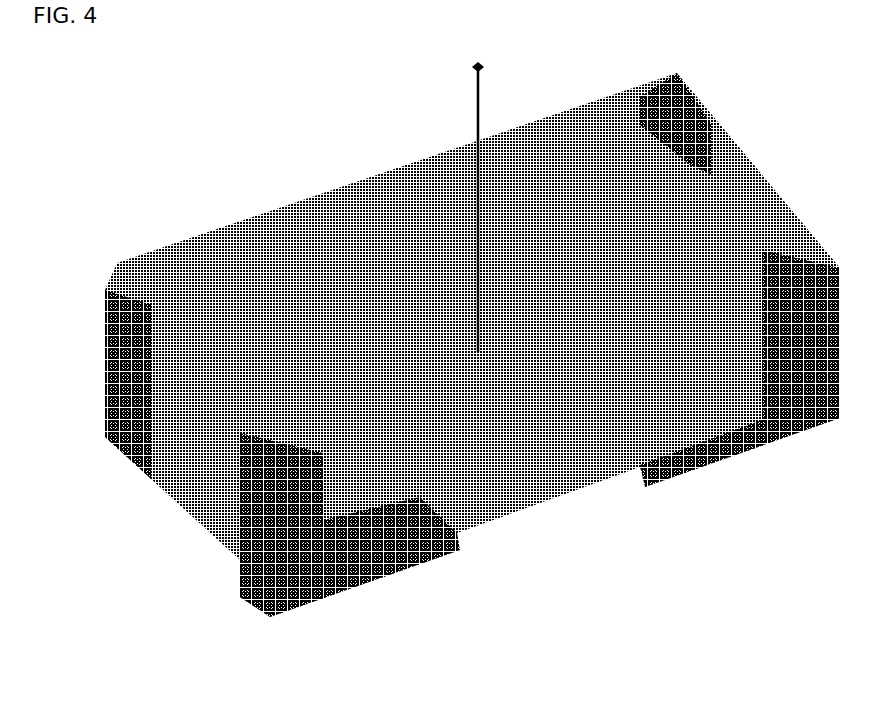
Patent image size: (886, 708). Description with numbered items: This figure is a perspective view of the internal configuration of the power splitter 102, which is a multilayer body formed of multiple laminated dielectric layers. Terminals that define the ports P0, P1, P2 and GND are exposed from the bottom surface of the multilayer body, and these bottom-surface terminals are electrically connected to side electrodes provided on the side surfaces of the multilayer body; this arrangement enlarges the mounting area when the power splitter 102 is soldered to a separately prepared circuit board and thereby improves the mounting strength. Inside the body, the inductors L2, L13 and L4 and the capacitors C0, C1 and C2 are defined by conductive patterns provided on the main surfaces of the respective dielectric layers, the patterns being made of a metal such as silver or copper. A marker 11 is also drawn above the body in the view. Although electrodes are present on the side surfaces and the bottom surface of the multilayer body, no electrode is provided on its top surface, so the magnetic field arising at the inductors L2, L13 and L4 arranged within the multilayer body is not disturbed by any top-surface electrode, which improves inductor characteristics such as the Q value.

The power splitter 102 is at (297, 53).
The probe pin 11 is at (481, 176).
The port P1 is at (123, 442).
The port P2 is at (707, 128).
The port P0 is at (820, 417).
The port GND is at (293, 597).
The capacitor C1 is at (198, 315).
The capacitor C2 is at (720, 215).
The capacitor C0 is at (658, 422).
The inductor L4 is at (535, 333).
The inductor L13 is at (503, 403).
The inductor L2 is at (460, 437).